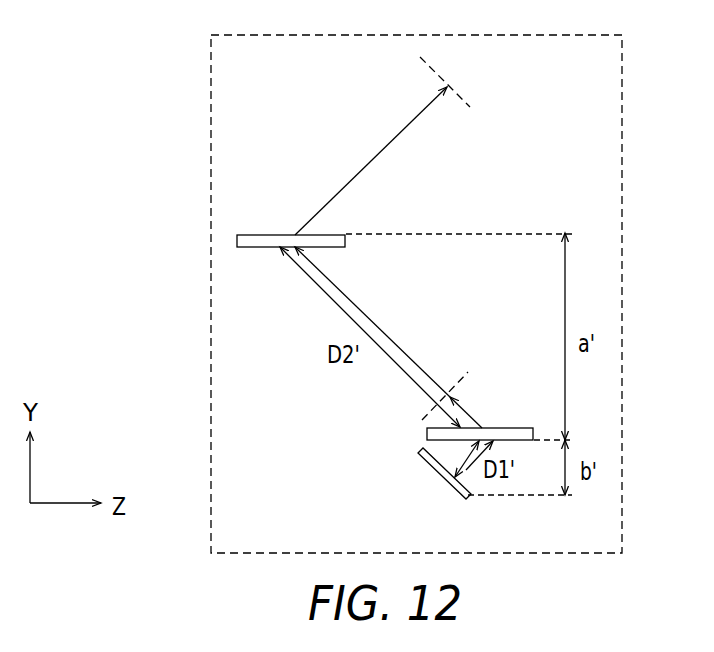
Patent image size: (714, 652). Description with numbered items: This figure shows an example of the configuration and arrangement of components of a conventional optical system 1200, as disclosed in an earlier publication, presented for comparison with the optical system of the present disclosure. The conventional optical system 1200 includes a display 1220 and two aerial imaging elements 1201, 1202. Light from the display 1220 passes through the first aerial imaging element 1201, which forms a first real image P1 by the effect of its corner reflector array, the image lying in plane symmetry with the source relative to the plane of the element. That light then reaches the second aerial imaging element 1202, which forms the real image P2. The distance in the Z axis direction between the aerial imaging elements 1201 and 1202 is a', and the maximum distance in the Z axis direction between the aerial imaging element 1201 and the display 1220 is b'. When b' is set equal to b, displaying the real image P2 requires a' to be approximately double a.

The optical system 1200 is at (211, 198).
The aerial imaging element 1201 is at (526, 411).
The aerial imaging element 1202 is at (332, 234).
The display 1220 is at (438, 468).
The first real image P1 is at (467, 370).
The real image P2 is at (460, 92).